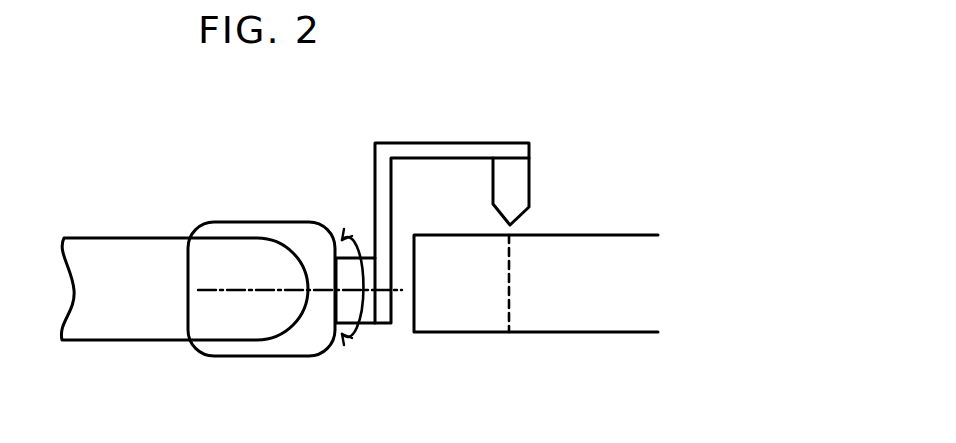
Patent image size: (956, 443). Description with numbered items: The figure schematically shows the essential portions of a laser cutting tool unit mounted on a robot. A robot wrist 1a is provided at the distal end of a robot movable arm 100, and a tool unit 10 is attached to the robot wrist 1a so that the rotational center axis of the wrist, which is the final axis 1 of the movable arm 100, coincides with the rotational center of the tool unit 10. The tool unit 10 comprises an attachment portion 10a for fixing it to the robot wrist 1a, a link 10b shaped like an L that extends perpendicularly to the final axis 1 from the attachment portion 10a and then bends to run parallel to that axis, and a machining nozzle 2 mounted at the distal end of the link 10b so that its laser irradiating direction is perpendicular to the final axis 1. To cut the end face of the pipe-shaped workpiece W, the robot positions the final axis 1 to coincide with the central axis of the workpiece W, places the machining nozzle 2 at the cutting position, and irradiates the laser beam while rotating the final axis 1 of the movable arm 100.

The robot movable arm 100 is at (162, 320).
The final axis 1 is at (248, 292).
The robot wrist 1a is at (300, 235).
The attachment portion 10a is at (368, 332).
The tool unit 10 is at (470, 113).
The link 10b is at (405, 146).
The machining nozzle 2 is at (520, 188).
The workpiece W is at (468, 320).